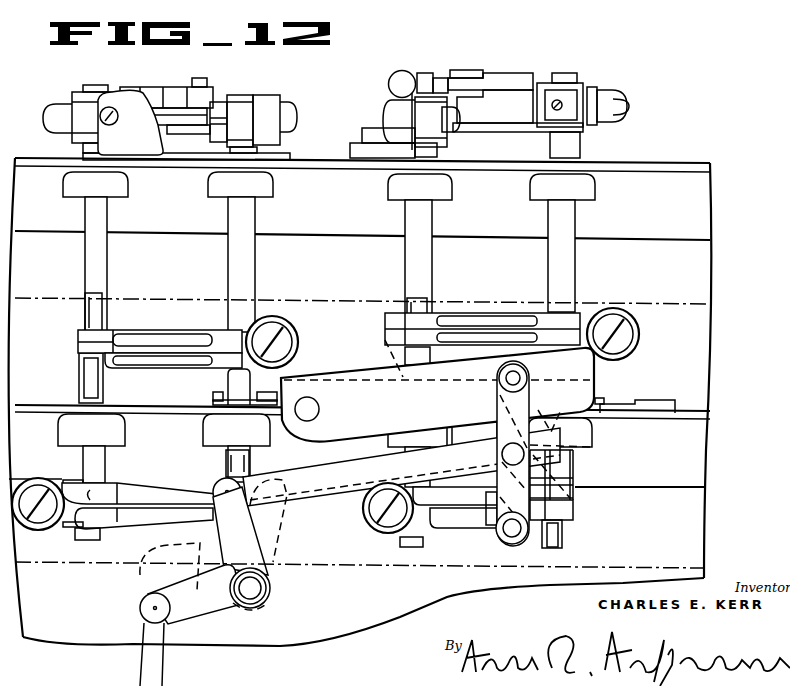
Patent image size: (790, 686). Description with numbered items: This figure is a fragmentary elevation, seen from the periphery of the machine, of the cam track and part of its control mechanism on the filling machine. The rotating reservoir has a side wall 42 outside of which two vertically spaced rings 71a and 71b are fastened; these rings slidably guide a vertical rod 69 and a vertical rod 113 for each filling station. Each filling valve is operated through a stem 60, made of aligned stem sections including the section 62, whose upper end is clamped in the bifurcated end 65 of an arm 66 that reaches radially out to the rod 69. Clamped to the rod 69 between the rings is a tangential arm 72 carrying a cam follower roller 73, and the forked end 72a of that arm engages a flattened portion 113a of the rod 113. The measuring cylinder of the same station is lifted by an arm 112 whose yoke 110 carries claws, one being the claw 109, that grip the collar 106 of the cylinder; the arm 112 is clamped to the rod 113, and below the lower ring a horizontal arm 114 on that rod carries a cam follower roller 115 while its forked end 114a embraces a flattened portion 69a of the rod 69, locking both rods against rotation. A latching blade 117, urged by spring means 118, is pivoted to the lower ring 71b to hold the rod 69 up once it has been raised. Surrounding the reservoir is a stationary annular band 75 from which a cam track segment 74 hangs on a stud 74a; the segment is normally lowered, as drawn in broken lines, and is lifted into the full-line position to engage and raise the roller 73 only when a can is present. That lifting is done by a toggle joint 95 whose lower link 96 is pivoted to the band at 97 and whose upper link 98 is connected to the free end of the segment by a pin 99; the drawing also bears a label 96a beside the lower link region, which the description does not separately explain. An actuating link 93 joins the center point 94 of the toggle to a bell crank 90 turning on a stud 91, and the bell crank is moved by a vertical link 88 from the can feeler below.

The side wall of the reservoir 42 is at (702, 268).
The stem 60 is at (200, 83).
The stem section 62 is at (207, 87).
The bifurcated end 65 is at (188, 90).
The arm 66 is at (270, 97).
The rod 69 is at (240, 257).
The flattened portion of the rod 69a is at (563, 547).
The upper ring 71a is at (680, 203).
The lower ring 71b is at (683, 458).
The arm 72 is at (165, 332).
The forked end 72a is at (418, 324).
The cam follower roller 73 is at (298, 340).
The cam track segment 74 is at (357, 370).
The stud 74a is at (319, 409).
The stationary annular band 75 is at (663, 303).
The vertical link 88 is at (147, 587).
The bell crank 90 is at (232, 537).
The stud 91 is at (251, 588).
The actuating link 93 is at (338, 478).
The center point of the toggle joint 94 is at (505, 450).
The toggle joint 95 is at (508, 408).
The lower link of the toggle joint 96 is at (499, 516).
The guide rod 96a is at (572, 493).
The pivot of the lower link 97 is at (517, 532).
The upper link of the toggle joint 98 is at (528, 401).
The pin 99 is at (518, 376).
The collar 106 is at (150, 118).
The claw 109 is at (157, 134).
The yoke 110 is at (197, 153).
The arm 112 is at (112, 92).
The vertical rod 113 is at (97, 276).
The flattened portion of the rod 113a is at (443, 290).
The horizontal arm 114 is at (172, 474).
The forked end 114a is at (573, 513).
The cam follower roller 115 is at (53, 530).
The latching blade 117 is at (215, 402).
The spring means 118 is at (217, 394).